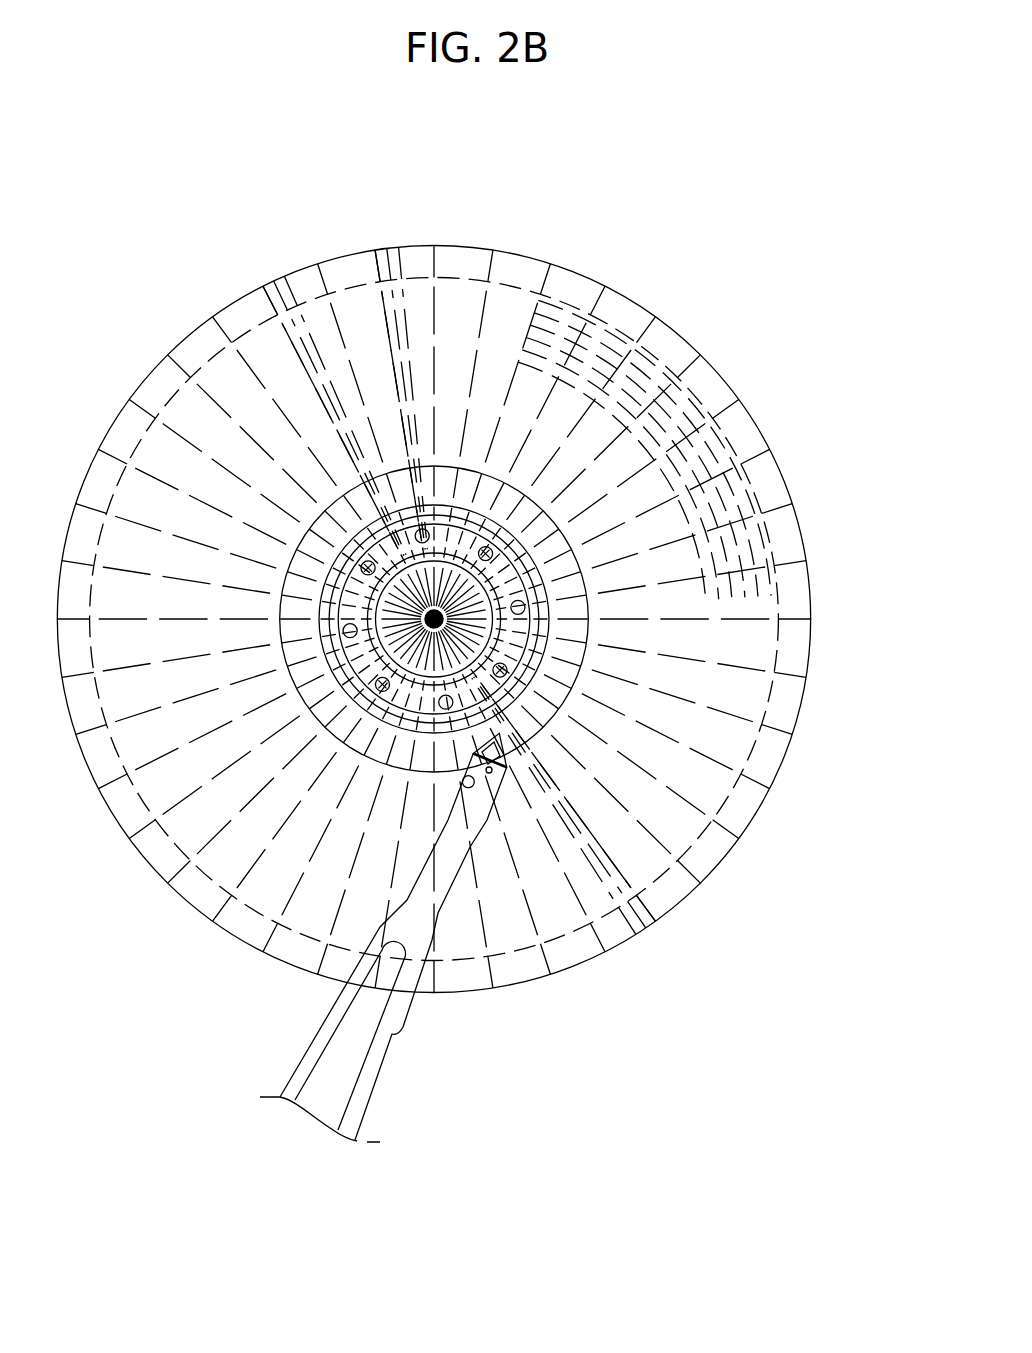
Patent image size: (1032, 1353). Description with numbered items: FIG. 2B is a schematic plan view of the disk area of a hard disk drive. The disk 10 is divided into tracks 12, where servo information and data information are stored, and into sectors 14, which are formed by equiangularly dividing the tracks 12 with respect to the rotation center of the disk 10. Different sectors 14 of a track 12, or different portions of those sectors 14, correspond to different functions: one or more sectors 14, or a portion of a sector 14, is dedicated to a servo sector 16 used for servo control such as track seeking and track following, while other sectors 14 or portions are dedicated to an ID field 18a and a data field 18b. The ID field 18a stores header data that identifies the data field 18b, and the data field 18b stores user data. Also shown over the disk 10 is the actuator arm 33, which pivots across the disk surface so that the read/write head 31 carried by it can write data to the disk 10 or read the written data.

The disk 10 is at (706, 866).
The tracks 12 is at (617, 318).
The sectors 14 is at (742, 642).
The servo sector 16 is at (264, 286).
The ID field 18a is at (276, 280).
The data field 18b is at (300, 270).
The read/write head 31 is at (500, 732).
The actuator arm 33 is at (372, 1079).